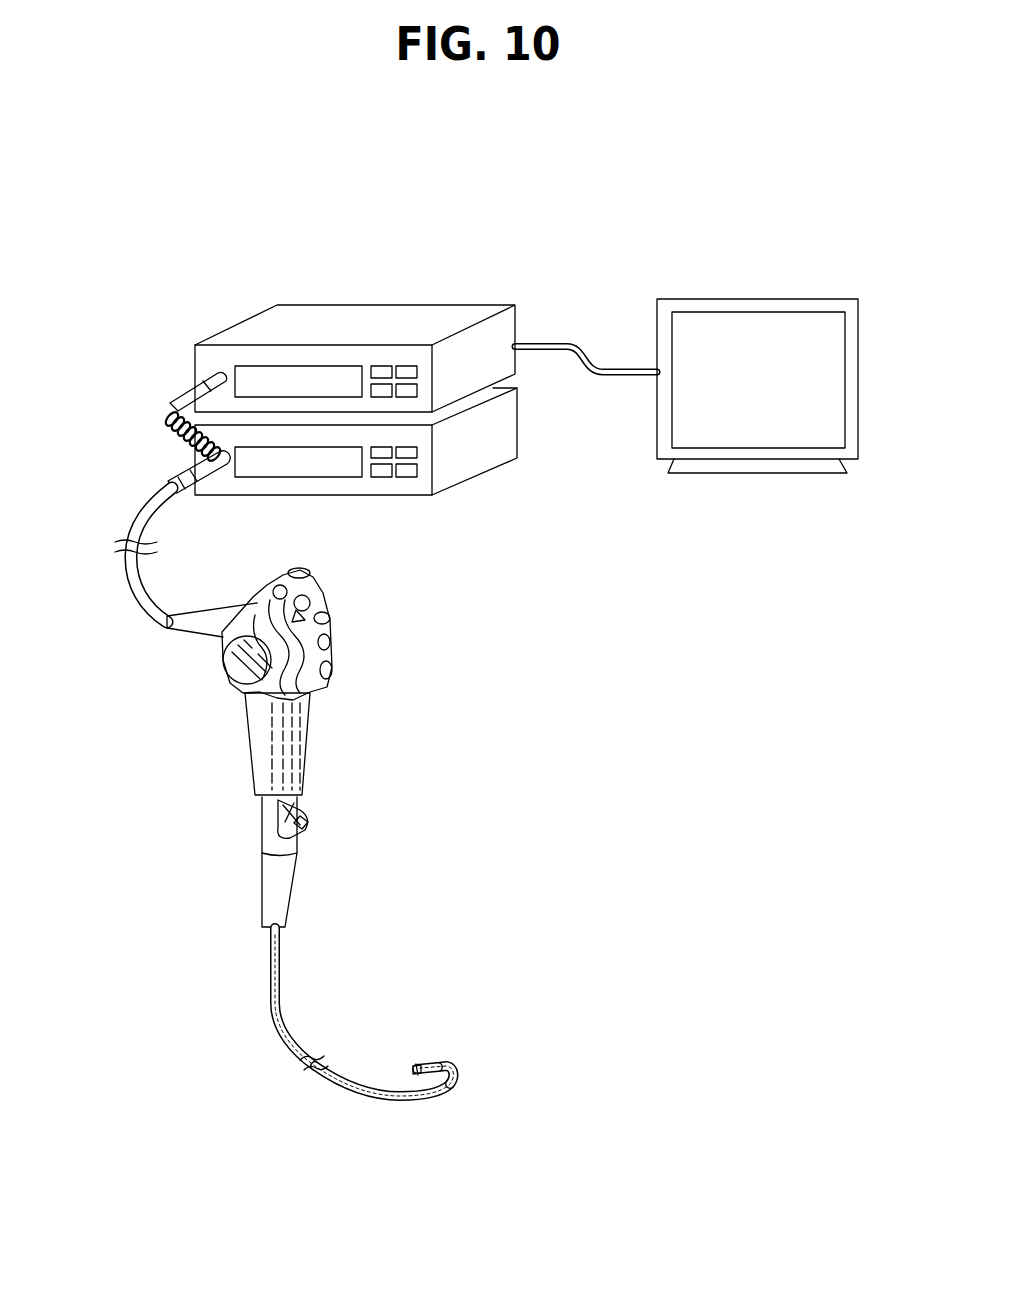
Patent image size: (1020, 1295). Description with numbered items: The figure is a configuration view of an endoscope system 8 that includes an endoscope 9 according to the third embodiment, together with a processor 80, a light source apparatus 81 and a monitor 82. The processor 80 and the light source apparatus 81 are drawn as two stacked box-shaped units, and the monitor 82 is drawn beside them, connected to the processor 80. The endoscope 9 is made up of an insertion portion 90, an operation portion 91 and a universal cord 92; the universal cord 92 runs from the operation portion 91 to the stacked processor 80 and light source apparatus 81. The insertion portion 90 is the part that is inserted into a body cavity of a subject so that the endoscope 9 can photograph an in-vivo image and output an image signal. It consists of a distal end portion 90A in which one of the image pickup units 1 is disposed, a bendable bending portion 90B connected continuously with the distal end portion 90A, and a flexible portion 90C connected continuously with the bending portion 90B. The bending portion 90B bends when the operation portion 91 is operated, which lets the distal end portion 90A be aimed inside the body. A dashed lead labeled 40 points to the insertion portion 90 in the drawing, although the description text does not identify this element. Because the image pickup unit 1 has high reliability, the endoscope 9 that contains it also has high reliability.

The endoscope system 8 is at (700, 171).
The processor 80 is at (485, 303).
The light source apparatus 81 is at (517, 420).
The monitor 82 is at (762, 297).
The endoscope 9 is at (417, 703).
The insertion portion 90 is at (280, 970).
The distal end portion 90A is at (417, 1071).
The bending portion 90B is at (455, 1088).
The flexible portion 90C is at (323, 1082).
The operation portion 91 is at (328, 657).
The universal cord 92 is at (128, 577).
The catheter 40 is at (277, 1047).
The image pickup unit 1 is at (417, 1064).